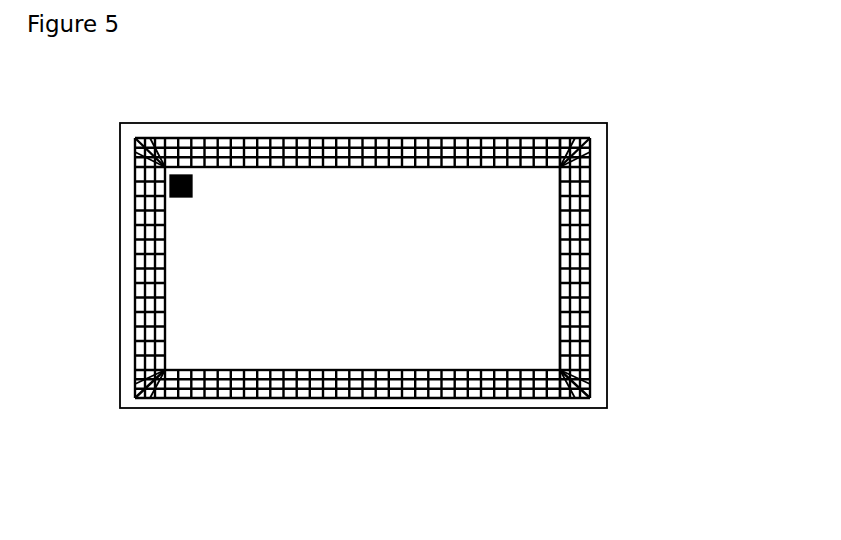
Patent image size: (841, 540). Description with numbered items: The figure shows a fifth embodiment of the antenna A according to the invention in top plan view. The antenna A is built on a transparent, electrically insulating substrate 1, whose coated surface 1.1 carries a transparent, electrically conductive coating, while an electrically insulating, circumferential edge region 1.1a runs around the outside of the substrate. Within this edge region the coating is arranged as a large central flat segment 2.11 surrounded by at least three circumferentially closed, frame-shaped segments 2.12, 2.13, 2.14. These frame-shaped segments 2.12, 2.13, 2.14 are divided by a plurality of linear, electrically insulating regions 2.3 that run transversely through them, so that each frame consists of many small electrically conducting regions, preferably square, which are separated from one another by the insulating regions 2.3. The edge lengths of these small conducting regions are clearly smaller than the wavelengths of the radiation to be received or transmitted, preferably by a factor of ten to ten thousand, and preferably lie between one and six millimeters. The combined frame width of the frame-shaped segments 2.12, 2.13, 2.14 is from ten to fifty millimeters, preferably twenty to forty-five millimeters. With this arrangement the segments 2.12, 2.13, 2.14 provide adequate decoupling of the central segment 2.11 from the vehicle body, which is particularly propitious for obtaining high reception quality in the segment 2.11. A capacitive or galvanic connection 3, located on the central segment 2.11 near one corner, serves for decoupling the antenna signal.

The transparent, electrically insulating substrate 1 is at (527, 412).
The coated surface of the transparent, electrically insulating substrate 1.1 is at (432, 447).
The electrically insulating, circumferential edge region 1.1a is at (402, 405).
The antenna A is at (443, 224).
The linear, electrically insulating region 2.3 is at (528, 148).
The flat segment 2.11 is at (532, 297).
The divided flat segment 2.12 is at (587, 248).
The divided flat segment 2.13 is at (588, 223).
The divided flat segment 2.14 is at (592, 189).
The capacitive connection or galvanic connection 3 is at (166, 181).